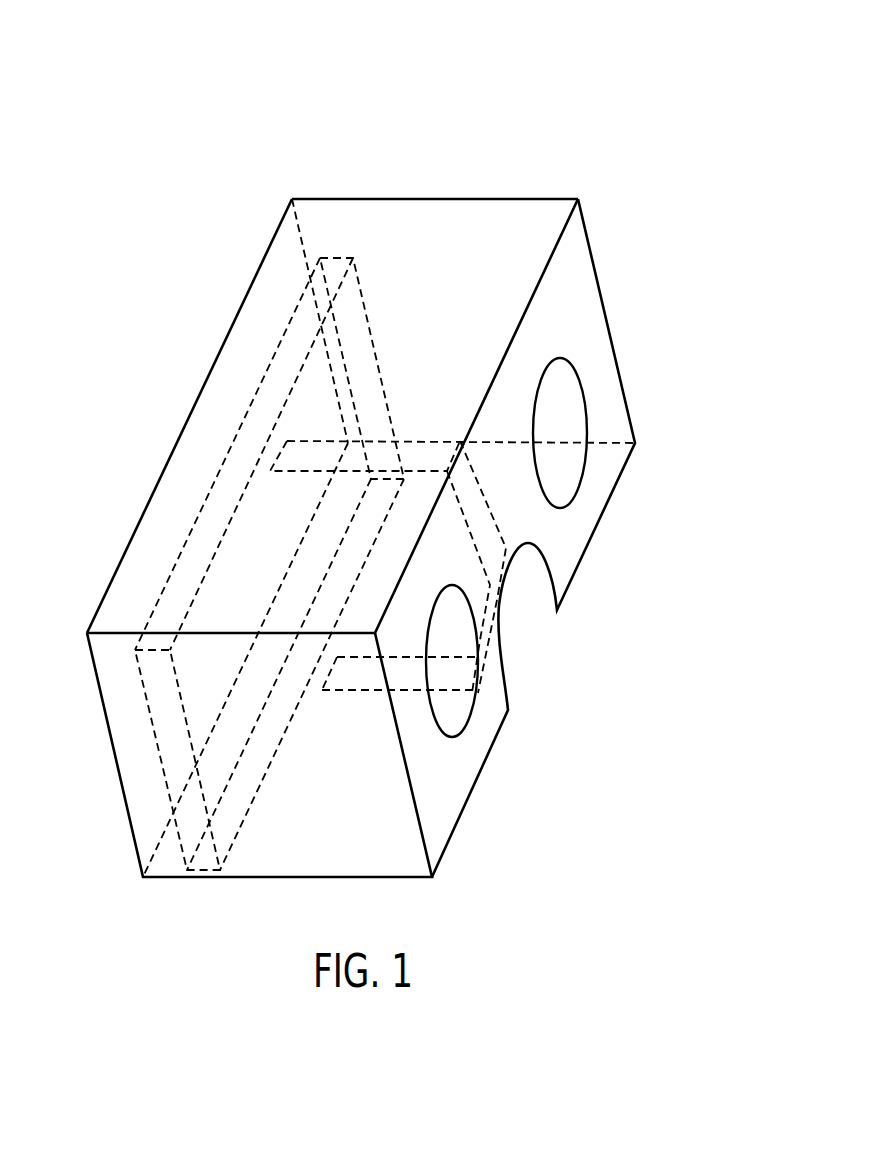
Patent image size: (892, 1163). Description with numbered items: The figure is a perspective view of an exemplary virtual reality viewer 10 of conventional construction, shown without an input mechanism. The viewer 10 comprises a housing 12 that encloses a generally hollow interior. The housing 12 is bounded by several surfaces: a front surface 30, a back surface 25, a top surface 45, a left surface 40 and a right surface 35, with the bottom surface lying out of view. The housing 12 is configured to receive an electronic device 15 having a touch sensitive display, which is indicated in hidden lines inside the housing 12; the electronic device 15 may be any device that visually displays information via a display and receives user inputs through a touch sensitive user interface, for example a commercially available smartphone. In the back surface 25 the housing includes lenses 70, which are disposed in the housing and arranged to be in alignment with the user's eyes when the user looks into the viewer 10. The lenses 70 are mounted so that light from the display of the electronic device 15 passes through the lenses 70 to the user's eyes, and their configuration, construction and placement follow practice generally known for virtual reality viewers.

The viewer 10 is at (507, 68).
The housing 12 is at (512, 210).
The electronic device 15 is at (310, 303).
The back surface 25 is at (585, 322).
The front surface 30 is at (228, 290).
The right surface 35 is at (391, 180).
The left surface 40 is at (333, 834).
The top surface 45 is at (446, 259).
The lenses 70 is at (560, 460).